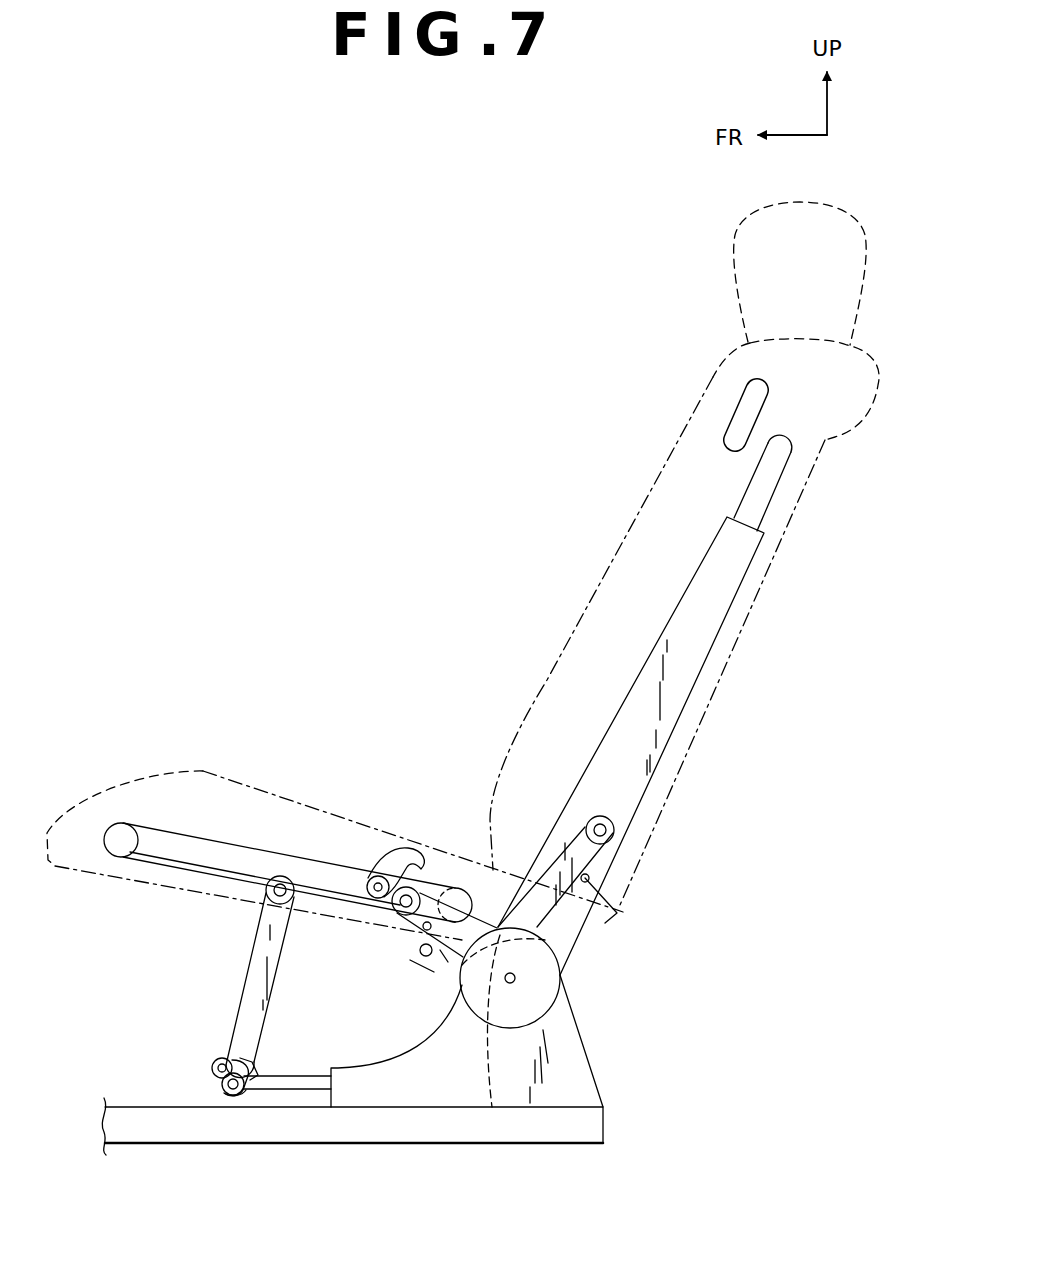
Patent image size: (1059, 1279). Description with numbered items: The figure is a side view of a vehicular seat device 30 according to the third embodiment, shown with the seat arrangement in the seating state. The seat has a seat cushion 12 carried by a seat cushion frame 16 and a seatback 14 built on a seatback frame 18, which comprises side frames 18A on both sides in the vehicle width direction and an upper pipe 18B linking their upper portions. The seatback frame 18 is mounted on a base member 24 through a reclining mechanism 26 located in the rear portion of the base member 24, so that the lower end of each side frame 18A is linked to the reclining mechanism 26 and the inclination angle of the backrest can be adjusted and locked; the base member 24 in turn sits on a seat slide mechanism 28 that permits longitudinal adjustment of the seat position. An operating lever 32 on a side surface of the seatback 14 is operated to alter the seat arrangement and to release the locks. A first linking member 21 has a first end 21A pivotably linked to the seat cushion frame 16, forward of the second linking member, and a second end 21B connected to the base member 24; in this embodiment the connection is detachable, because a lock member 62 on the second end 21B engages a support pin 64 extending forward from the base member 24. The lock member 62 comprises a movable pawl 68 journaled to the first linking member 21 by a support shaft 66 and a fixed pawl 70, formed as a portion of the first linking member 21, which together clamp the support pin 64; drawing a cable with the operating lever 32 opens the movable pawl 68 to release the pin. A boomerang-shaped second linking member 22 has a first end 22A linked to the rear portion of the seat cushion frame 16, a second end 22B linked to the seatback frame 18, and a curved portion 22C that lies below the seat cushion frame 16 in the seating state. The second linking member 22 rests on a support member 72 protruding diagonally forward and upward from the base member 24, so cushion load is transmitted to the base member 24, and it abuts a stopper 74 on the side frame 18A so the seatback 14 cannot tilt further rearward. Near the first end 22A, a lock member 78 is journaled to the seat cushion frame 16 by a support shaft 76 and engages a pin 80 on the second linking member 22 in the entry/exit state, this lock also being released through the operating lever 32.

The seat cushion 12 is at (223, 773).
The seatback 14 is at (616, 545).
The seat cushion frame 16 is at (195, 832).
The seatback frame 18 is at (685, 705).
The side frame 18A is at (695, 625).
The upper pipe 18B is at (768, 485).
The first linking member 21 is at (190, 939).
The first end of the first linking member 21A is at (278, 878).
The second end of the first linking member 21B is at (212, 1066).
The second linking member 22 is at (613, 841).
The first end of the second linking member 22A is at (412, 888).
The second end of the second linking member 22B is at (616, 830).
The curved portion 22C is at (493, 1021).
The base member 24 is at (583, 1070).
The reclining mechanism 26 is at (560, 962).
The seat slide mechanism 28 is at (420, 1107).
The vehicular seat device 30 is at (487, 282).
The operating lever 32 is at (728, 428).
The lock member 62 is at (258, 1097).
The support pin 64 is at (232, 1097).
The support shaft 66 is at (220, 1062).
The movable pawl 68 is at (257, 1057).
The fixed pawl 70 is at (225, 1088).
The support member 72 is at (420, 955).
The stopper 74 is at (592, 878).
The support shaft 76 is at (372, 897).
The lock member 78 is at (392, 852).
The pin 80 is at (400, 912).